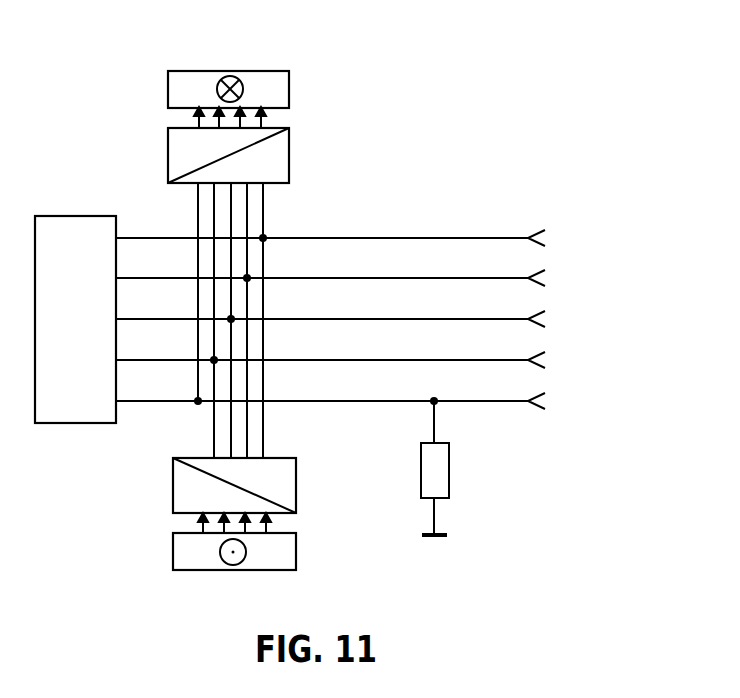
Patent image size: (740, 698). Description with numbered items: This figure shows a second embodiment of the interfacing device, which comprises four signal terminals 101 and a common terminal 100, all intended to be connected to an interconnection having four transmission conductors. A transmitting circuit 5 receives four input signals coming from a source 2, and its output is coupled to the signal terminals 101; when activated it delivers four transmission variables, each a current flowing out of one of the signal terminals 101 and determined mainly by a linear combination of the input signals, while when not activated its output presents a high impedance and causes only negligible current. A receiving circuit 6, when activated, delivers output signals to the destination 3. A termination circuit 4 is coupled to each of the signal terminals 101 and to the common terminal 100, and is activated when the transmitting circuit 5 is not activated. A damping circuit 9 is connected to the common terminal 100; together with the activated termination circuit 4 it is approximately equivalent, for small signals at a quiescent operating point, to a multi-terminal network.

The source 2 is at (153, 552).
The destination 3 is at (230, 62).
The termination circuit 4 is at (62, 208).
The transmitting circuit 5 is at (152, 483).
The receiving circuit 6 is at (293, 155).
The damping circuit 9 is at (477, 488).
The common terminal 100 is at (555, 393).
The signal terminals 101 is at (553, 228).